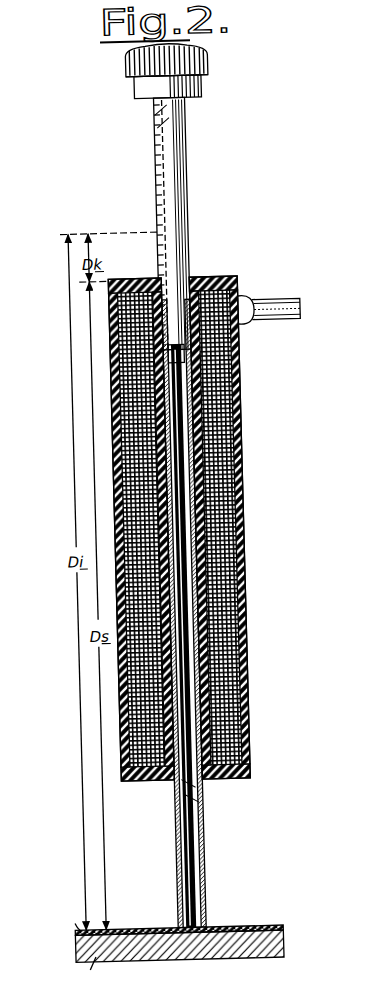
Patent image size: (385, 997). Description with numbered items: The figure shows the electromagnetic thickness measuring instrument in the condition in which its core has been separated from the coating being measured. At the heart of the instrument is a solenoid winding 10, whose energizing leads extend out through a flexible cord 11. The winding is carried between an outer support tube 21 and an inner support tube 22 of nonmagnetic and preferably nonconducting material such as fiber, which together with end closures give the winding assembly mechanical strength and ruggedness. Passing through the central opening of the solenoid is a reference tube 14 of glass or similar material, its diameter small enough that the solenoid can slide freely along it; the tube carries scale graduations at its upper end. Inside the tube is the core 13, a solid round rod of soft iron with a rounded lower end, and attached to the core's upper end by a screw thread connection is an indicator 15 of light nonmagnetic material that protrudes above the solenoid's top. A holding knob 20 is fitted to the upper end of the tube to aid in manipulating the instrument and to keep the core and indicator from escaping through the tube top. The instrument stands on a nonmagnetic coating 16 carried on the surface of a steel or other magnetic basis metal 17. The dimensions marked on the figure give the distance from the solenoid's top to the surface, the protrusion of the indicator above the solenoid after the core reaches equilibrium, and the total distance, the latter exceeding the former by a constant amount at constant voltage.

The solenoid winding 10 is at (197, 528).
The flexible cord 11 is at (262, 308).
The core 13 is at (167, 649).
The reference tube 14 is at (189, 854).
The indicator 15 is at (236, 372).
The nonmagnetic coating 16 is at (256, 927).
The basis metal 17 is at (254, 944).
The holding knob 20 is at (212, 72).
The outer support tube 21 is at (236, 484).
The inner support tube 22 is at (236, 559).